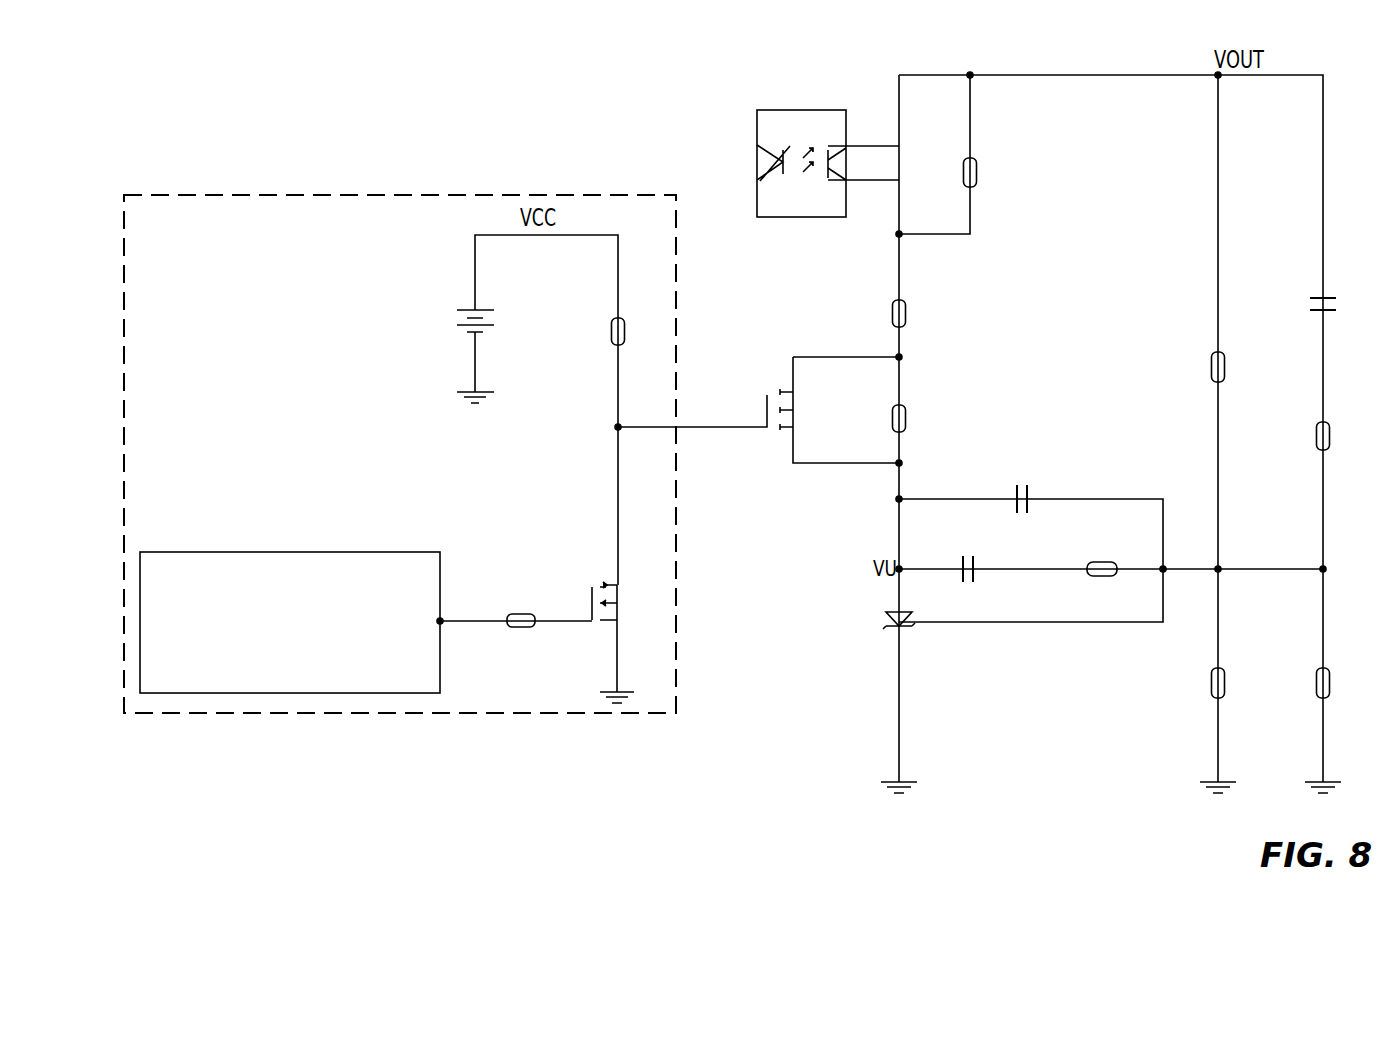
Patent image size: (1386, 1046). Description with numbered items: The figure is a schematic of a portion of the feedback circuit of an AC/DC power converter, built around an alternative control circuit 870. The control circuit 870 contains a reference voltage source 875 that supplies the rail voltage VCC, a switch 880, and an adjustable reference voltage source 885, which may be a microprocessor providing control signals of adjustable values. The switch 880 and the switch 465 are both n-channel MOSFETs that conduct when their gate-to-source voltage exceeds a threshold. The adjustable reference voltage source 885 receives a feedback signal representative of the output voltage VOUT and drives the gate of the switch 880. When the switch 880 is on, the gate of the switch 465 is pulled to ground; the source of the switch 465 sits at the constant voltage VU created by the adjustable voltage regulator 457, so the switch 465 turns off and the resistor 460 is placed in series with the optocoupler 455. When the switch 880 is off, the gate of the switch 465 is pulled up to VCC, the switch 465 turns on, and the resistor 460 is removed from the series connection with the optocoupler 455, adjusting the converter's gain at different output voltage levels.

The control circuit 870 is at (330, 194).
The reference voltage source 875 is at (462, 300).
The switch 880 is at (592, 582).
The adjustable reference voltage source 885 is at (337, 551).
The optocoupler 455 is at (805, 230).
The resistor 460 is at (908, 423).
The switch 465 is at (782, 448).
The adjustable voltage regulator 457 is at (892, 606).